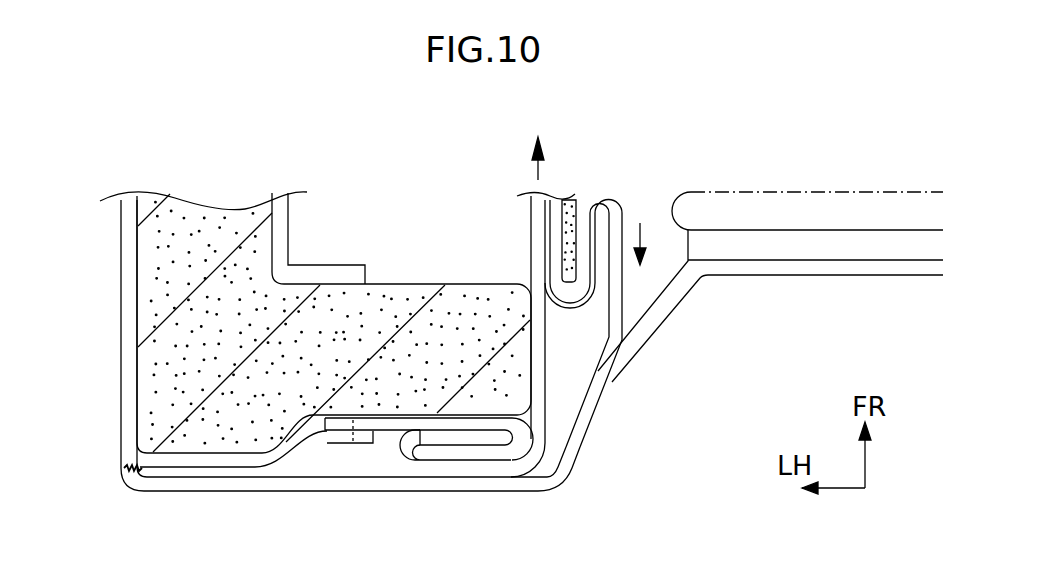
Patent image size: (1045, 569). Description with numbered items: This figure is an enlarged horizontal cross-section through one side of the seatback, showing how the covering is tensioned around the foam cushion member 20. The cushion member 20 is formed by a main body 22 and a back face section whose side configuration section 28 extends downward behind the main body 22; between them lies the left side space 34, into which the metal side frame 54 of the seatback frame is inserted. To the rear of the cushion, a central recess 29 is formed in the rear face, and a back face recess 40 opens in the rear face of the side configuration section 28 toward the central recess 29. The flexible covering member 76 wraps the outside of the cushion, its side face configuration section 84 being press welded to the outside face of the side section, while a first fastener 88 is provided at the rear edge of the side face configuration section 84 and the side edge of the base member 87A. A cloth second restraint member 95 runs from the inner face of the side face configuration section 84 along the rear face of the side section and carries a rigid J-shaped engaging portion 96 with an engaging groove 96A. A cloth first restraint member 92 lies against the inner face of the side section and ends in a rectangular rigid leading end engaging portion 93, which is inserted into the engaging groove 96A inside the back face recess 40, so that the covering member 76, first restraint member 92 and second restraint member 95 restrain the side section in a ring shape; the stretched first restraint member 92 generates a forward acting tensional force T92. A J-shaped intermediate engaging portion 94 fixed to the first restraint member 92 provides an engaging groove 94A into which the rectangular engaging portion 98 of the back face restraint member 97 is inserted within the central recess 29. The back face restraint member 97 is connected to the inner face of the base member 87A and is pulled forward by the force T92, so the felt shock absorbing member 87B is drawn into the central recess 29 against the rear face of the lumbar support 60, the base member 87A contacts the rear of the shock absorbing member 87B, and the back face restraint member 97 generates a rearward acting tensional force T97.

The cushion member 20 is at (155, 250).
The main body 22 is at (205, 211).
The side frame 54 is at (283, 219).
The side face configuration section 84 is at (129, 307).
The covering member 76 is at (129, 406).
The first fastener 88 is at (124, 468).
The second restraint member 95 is at (217, 470).
The back face recess 40 is at (386, 421).
The engaging portion 96 is at (447, 424).
The leading end engaging portion 93 is at (467, 440).
The engaging groove 96A is at (488, 432).
The first restraint member 92 is at (523, 468).
The central recess 29 is at (545, 388).
The side configuration section 28 is at (445, 302).
The left side space 34 is at (483, 284).
The engaging groove 94A is at (562, 250).
The intermediate engaging portion 94 is at (570, 298).
The engaging portion 98 is at (572, 200).
The back face restraint member 97 is at (623, 297).
The lumbar support 60 is at (848, 191).
The base member 87A is at (818, 276).
The shock absorbing member 87B is at (886, 248).
The forward acting tensional force T92 is at (540, 163).
The rearward acting tensional force T97 is at (644, 236).